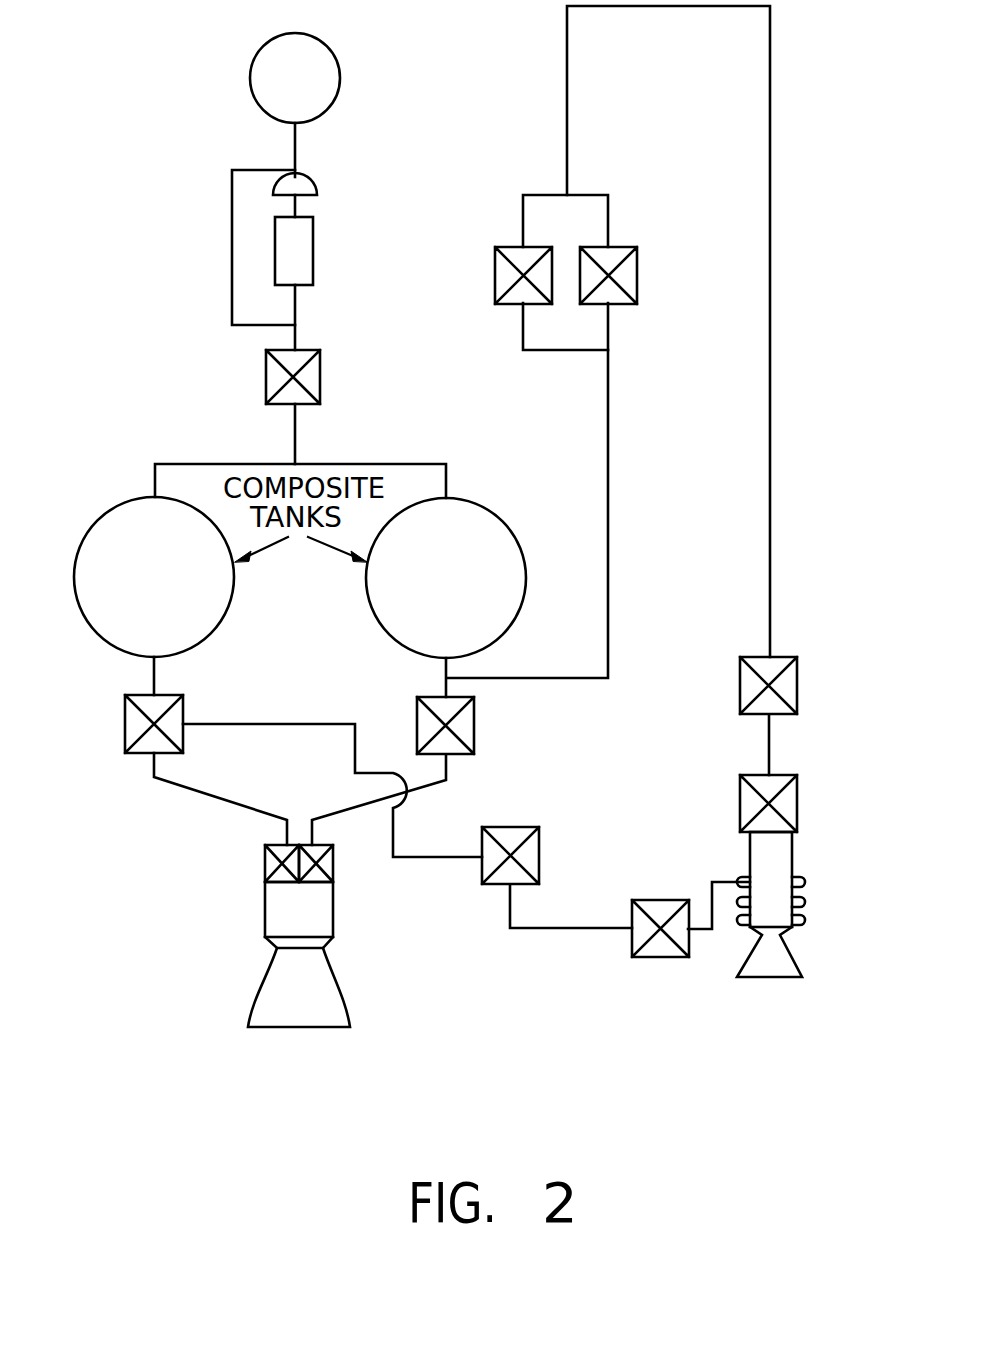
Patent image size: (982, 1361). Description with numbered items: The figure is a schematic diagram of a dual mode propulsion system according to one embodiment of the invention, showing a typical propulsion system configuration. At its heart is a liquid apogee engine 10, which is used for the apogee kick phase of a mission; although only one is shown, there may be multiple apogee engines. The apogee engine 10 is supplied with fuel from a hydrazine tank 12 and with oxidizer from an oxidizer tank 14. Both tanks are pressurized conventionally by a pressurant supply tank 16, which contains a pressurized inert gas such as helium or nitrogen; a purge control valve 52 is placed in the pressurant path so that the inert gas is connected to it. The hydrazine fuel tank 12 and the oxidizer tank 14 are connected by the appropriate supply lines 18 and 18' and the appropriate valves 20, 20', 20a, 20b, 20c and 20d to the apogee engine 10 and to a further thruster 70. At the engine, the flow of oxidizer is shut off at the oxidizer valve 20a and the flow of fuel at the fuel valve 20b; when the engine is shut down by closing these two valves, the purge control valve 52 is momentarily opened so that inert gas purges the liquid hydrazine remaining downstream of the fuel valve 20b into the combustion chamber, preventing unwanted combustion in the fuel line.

The liquid apogee engine 10 is at (258, 920).
The hydrazine tank 12 is at (500, 517).
The oxidizer tank 14 is at (100, 518).
The pressurant supply tank 16 is at (340, 40).
The supply line 18 is at (667, 390).
The supply line 18' is at (452, 791).
The valve 20 is at (641, 467).
The valve 20' is at (316, 789).
The oxidizer valve 20a is at (265, 866).
The fuel valve 20b is at (333, 867).
The valve 20c is at (648, 958).
The valve 20d is at (797, 784).
The purge control valve 52 is at (320, 362).
The thruster 70 is at (793, 953).